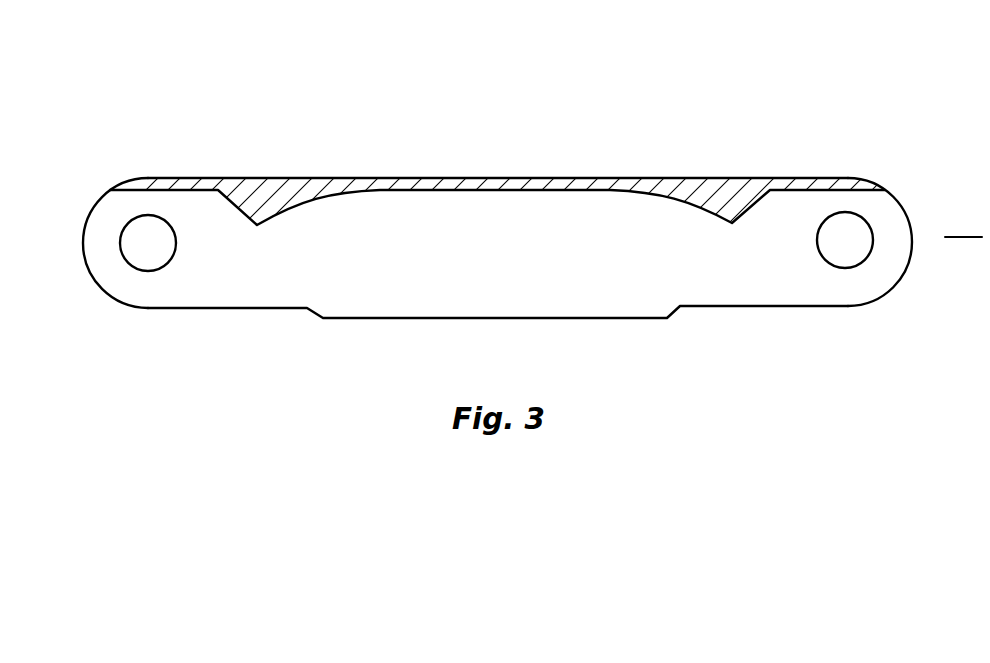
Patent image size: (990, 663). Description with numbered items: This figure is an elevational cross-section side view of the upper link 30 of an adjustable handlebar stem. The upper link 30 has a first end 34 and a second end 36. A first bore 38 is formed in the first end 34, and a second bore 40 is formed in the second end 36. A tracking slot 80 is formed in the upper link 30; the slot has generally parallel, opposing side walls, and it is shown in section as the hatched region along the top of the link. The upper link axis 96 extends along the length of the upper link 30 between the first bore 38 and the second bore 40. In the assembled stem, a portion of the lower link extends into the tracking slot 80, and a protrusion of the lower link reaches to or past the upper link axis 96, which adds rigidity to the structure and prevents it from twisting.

The upper link 30 is at (257, 199).
The first end 34 is at (93, 202).
The second end 36 is at (887, 190).
The first bore 38 is at (121, 250).
The second bore 40 is at (873, 225).
The tracking slot 80 is at (372, 213).
The upper link axis 96 is at (962, 239).